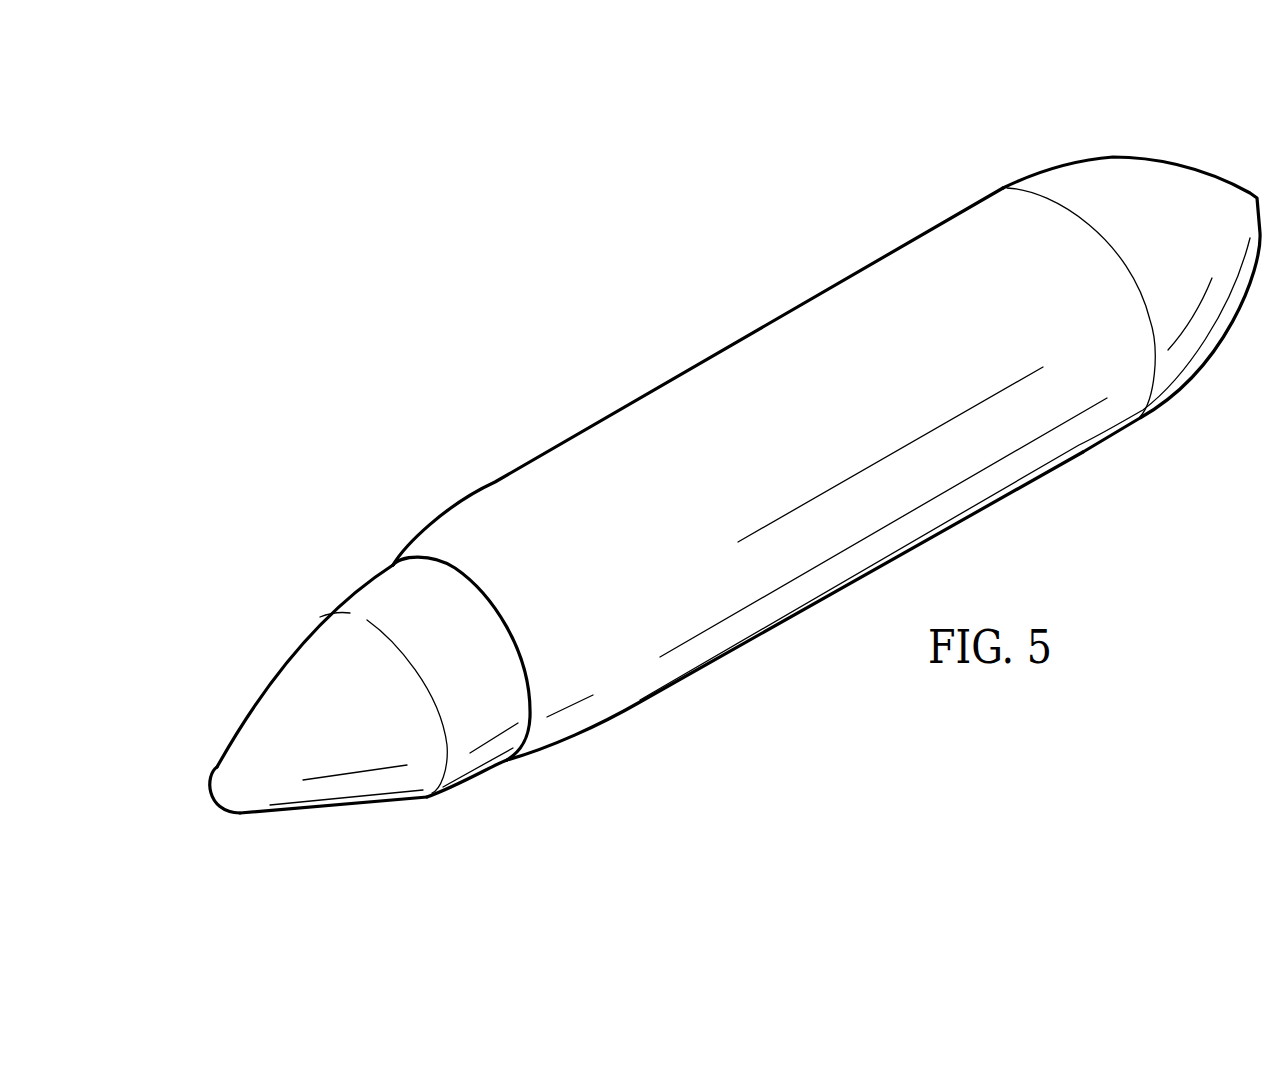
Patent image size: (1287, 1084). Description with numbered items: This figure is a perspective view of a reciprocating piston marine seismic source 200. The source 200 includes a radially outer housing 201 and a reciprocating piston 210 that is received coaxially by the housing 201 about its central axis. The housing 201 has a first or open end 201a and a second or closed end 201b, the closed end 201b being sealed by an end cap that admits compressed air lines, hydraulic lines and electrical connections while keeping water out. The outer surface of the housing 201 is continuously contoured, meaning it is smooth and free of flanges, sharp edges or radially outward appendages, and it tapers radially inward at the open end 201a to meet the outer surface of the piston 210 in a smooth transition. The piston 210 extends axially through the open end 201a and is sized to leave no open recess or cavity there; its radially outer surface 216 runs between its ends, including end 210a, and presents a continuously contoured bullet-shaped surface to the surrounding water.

The marine seismic source 200 is at (556, 306).
The radially outer housing 201 is at (721, 336).
The open end of housing 201a is at (448, 563).
The closed end of housing 201b is at (1190, 162).
The reciprocating piston 210 is at (493, 783).
The end of piston 210a is at (215, 798).
The radially outer surface of piston 216 is at (256, 691).